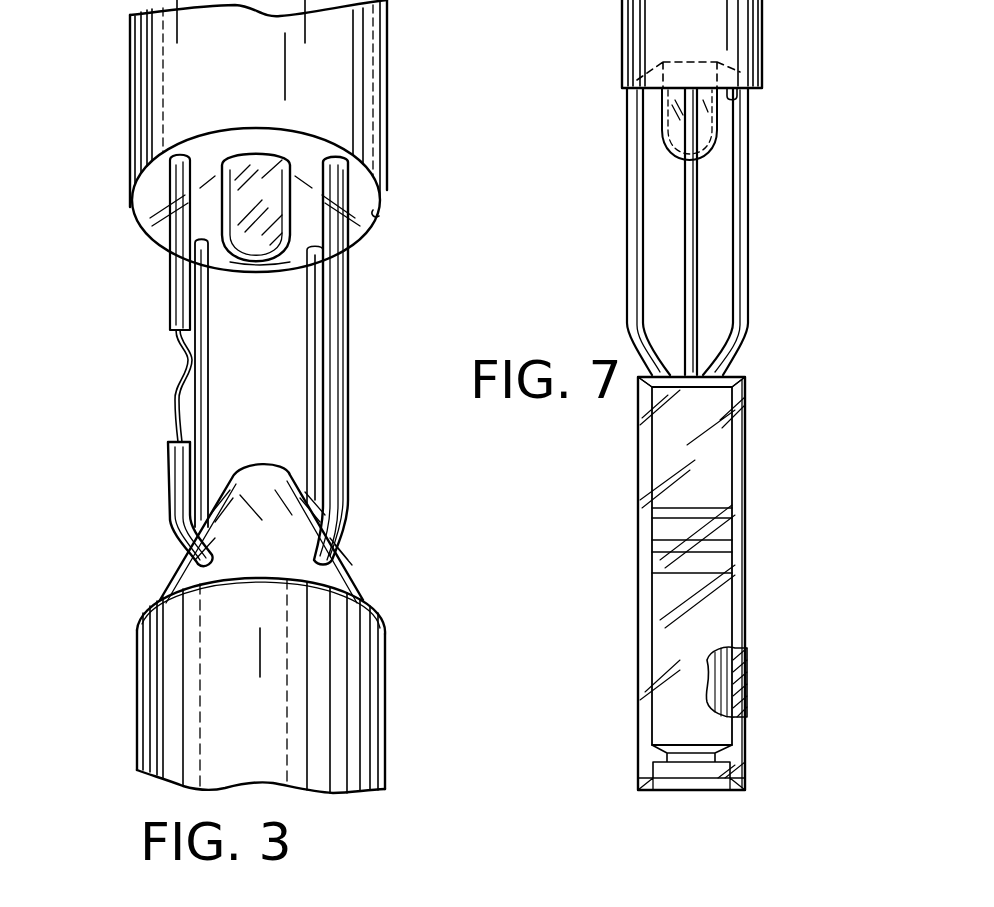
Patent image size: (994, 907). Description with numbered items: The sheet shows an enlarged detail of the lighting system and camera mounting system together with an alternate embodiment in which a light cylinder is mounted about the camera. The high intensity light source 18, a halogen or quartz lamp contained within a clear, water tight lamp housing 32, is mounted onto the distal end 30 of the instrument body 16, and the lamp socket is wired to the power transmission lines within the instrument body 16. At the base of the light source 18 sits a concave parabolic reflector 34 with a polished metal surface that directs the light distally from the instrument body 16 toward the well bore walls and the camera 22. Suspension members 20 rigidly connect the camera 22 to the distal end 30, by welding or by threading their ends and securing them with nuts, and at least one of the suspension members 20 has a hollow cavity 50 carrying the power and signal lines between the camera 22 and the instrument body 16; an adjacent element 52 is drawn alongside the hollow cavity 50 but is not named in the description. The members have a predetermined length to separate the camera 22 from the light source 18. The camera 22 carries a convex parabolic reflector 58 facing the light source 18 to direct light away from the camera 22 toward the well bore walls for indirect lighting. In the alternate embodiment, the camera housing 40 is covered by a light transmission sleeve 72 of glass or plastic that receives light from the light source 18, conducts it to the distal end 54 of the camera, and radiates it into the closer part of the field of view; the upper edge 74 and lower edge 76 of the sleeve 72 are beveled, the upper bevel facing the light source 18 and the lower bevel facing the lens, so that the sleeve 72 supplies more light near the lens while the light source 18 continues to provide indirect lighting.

In FIG. 3, the instrument body 16 is at (150, 50).
In FIG. 3, the high intensity light source 18 is at (222, 207).
In FIG. 3, the suspension members 20 is at (348, 422).
In FIG. 7, the suspension members 20 is at (683, 210).
In FIG. 3, the camera 22 is at (378, 669).
In FIG. 3, the distal end 30 is at (372, 187).
In FIG. 7, the distal end 30 is at (733, 100).
In FIG. 3, the lamp housing 32 is at (222, 262).
In FIG. 3, the concave parabolic reflector 34 is at (380, 216).
In FIG. 7, the concave parabolic reflector 34 is at (660, 68).
In FIG. 7, the camera housing 40 is at (720, 452).
In FIG. 3, the hollow cavity 50 is at (178, 442).
In FIG. 3, the wire 52 is at (177, 388).
In FIG. 7, the distal end of the camera 54 is at (693, 777).
In FIG. 3, the convex parabolic reflector 58 is at (333, 553).
In FIG. 7, the light transmission sleeve 72 is at (742, 482).
In FIG. 7, the upper edge 74 is at (733, 372).
In FIG. 7, the lower edge 76 is at (653, 793).